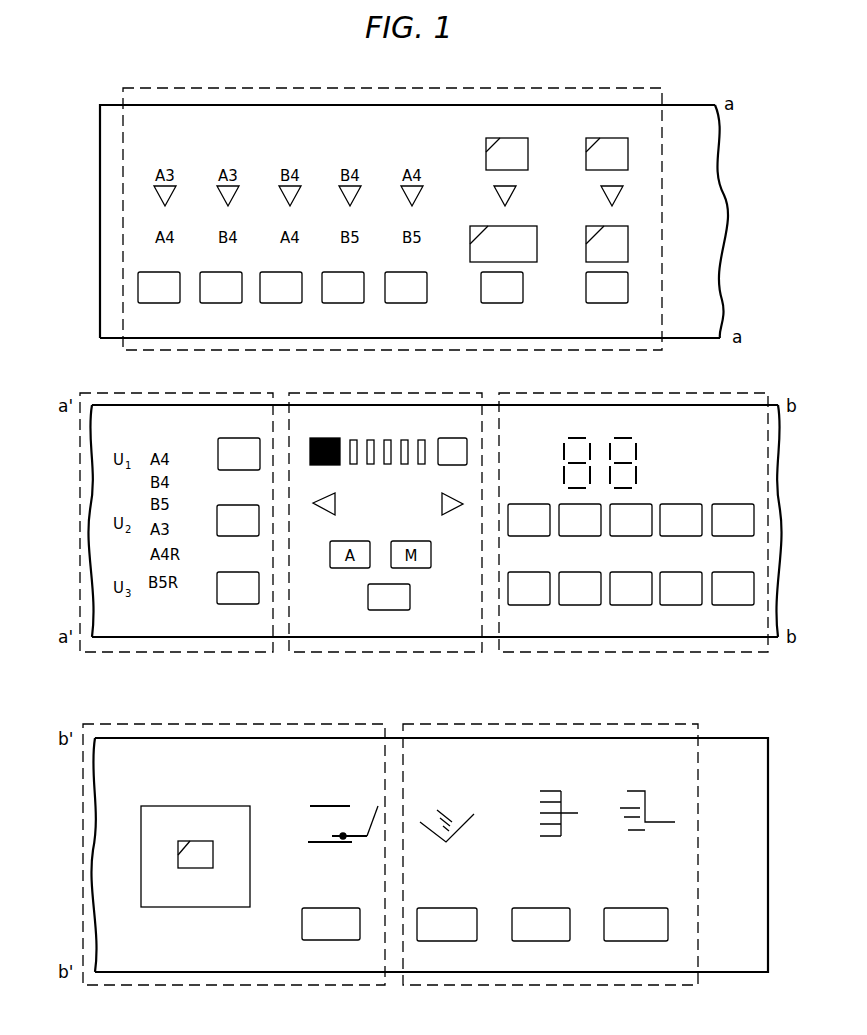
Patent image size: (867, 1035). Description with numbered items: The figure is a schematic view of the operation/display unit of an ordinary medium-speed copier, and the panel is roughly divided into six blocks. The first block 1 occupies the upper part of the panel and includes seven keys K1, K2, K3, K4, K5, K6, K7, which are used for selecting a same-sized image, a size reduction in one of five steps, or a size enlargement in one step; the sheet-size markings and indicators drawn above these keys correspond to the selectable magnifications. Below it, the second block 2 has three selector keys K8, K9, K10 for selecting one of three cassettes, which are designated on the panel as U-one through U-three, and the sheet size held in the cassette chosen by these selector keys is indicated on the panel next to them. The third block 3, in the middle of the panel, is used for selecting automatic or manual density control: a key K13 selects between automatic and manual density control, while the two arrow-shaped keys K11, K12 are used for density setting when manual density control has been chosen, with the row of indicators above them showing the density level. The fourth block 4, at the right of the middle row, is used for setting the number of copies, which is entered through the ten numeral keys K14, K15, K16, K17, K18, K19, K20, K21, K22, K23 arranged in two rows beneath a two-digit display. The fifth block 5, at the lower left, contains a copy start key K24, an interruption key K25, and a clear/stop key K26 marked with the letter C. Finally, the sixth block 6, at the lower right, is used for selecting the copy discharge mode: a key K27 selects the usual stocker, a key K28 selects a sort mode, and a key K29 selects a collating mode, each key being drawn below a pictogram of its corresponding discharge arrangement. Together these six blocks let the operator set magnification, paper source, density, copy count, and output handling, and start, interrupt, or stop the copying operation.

The block 1 is at (392, 206).
The block 2 is at (171, 511).
The block 3 is at (384, 511).
The block 4 is at (633, 511).
The block 5 is at (229, 843).
The block 6 is at (550, 843).
The key K1 is at (161, 303).
The key K2 is at (223, 303).
The key K3 is at (283, 303).
The key K4 is at (345, 303).
The key K5 is at (408, 303).
The key K6 is at (504, 303).
The key K7 is at (611, 303).
The selector key K8 is at (228, 438).
The selector key K9 is at (228, 505).
The selector key K10 is at (232, 572).
The key K11 is at (336, 506).
The key K12 is at (452, 515).
The key K13 is at (400, 610).
The numeral key K14 is at (631, 594).
The numeral key K15 is at (529, 520).
The numeral key K16 is at (580, 520).
The numeral key K17 is at (631, 520).
The numeral key K18 is at (681, 520).
The numeral key K19 is at (733, 520).
The numeral key K20 is at (529, 588).
The numeral key K21 is at (580, 588).
The numeral key K22 is at (631, 588).
The numeral key K23 is at (681, 588).
The copy start key K24 is at (215, 907).
The interruption key K25 is at (325, 806).
The clear/stop key K26 is at (331, 940).
The key K27 is at (454, 941).
The key K28 is at (555, 941).
The key K29 is at (652, 941).